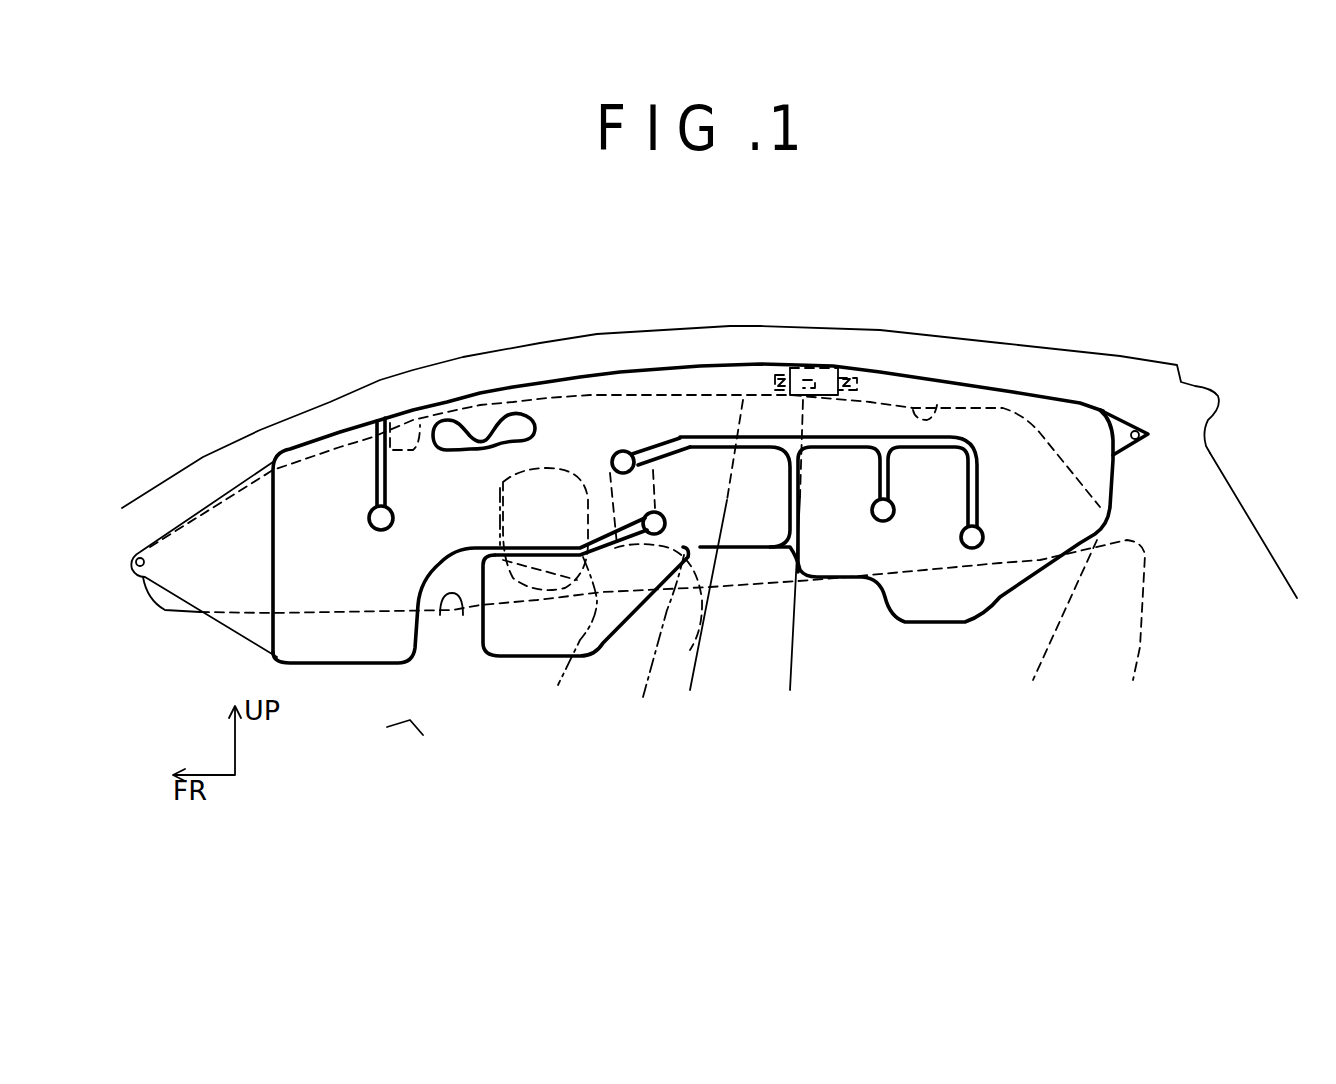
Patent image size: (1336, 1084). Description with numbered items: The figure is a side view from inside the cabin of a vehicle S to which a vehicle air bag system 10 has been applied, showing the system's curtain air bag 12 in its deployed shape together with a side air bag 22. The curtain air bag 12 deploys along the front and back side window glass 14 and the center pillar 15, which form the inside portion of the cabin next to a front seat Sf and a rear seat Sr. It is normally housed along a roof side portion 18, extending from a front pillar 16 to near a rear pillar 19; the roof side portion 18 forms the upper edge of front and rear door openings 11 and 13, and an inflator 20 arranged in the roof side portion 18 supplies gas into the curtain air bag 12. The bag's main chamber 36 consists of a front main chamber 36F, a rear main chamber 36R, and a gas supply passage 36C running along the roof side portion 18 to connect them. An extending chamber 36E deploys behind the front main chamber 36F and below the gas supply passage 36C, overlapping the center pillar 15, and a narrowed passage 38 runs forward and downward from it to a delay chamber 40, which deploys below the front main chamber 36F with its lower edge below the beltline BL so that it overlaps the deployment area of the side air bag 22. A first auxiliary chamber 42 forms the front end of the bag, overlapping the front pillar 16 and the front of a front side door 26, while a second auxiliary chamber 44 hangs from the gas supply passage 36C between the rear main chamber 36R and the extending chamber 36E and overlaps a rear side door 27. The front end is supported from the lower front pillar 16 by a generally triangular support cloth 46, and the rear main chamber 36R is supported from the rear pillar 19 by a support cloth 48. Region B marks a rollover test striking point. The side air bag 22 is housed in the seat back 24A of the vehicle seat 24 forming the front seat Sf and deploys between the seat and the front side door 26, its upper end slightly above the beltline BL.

The vehicle air bag system 10 is at (603, 753).
The front door opening 11 is at (372, 420).
The curtain air bag 12 is at (1100, 397).
The rear door opening 13 is at (913, 410).
The side window glass 14 is at (590, 400).
The center pillar 15 is at (780, 630).
The front pillar 16 is at (203, 468).
The roof side portion 18 is at (777, 357).
The rear pillar 19 is at (1210, 453).
The inflator 20 is at (823, 382).
The side air bag 22 is at (440, 615).
The vehicle seat 24 is at (657, 670).
The seat back 24A is at (633, 660).
The front side door 26 is at (390, 692).
The rear side door 27 is at (1007, 610).
The main chamber 36 is at (821, 441).
The front main chamber 36F is at (513, 417).
The extending chamber 36E is at (687, 463).
The gas supply passage 36C is at (713, 385).
The rear main chamber 36R is at (1100, 463).
The narrowed passage 38 is at (673, 540).
The delay chamber 40 is at (596, 633).
The first auxiliary chamber 42 is at (320, 647).
The second auxiliary chamber 44 is at (937, 595).
The support cloth 46 is at (218, 582).
The support cloth 48 is at (1122, 428).
The region B is at (503, 500).
The beltline BL is at (462, 615).
The vehicle S is at (1070, 325).
The front seat Sf is at (672, 660).
The rear seat Sr is at (1137, 640).